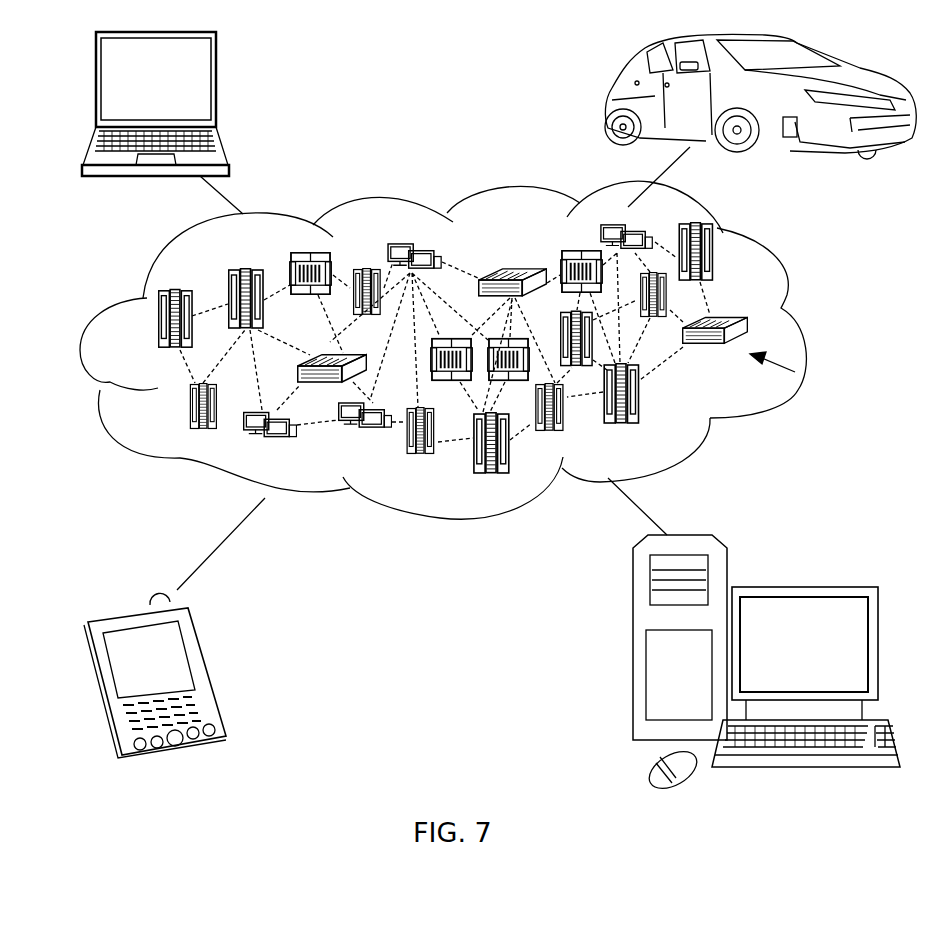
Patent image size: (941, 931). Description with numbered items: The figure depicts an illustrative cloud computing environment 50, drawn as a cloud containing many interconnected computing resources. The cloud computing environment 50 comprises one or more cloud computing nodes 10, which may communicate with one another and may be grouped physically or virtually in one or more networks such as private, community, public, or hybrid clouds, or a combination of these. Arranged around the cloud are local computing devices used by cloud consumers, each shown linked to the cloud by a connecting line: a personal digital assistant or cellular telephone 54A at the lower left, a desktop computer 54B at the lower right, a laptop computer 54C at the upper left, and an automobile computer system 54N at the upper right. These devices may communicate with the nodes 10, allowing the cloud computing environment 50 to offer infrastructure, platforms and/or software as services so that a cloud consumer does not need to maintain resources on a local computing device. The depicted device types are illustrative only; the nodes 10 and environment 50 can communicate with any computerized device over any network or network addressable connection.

The cloud computing node 10 is at (792, 370).
The cloud computing environment 50 is at (793, 328).
The personal digital assistant or cellular telephone 54A is at (207, 668).
The desktop computer 54B is at (800, 585).
The laptop computer 54C is at (218, 83).
The automobile computer system 54N is at (608, 100).